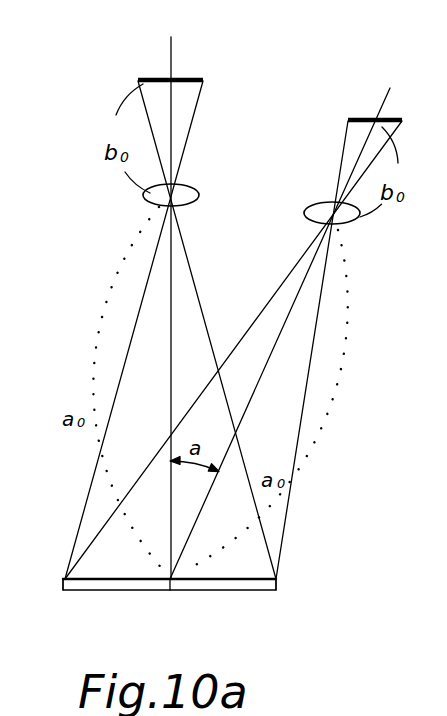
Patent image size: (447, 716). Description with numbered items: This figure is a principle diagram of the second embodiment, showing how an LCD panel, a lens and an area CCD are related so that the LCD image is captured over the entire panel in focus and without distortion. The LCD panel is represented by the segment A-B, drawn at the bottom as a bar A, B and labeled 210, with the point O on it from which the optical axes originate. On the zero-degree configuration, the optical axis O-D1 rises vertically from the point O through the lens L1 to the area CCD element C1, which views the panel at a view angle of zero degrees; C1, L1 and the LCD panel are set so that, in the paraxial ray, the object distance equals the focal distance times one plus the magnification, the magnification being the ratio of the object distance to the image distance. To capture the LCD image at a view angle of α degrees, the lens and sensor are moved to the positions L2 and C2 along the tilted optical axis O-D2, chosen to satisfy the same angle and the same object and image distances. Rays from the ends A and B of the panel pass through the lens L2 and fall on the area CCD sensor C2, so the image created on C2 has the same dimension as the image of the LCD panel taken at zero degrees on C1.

The baseline / object plane 210 is at (195, 590).
The lens at a view angle of zero degrees L1 is at (190, 196).
The lens at a view angle of α degrees L2 is at (315, 207).
The area CCD element at a view angle of zero degrees C1 is at (170, 323).
The area CCD sensor at a view angle of α degrees C2 is at (247, 349).
The optical axis at a view angle of zero degrees D1 is at (174, 295).
The optical axis at a view angle of α degrees D2 is at (280, 329).
The end point of the LCD panel A is at (46, 587).
The end point of the LCD panel B is at (290, 586).
The origin point of the optical axes on the LCD panel O is at (167, 599).